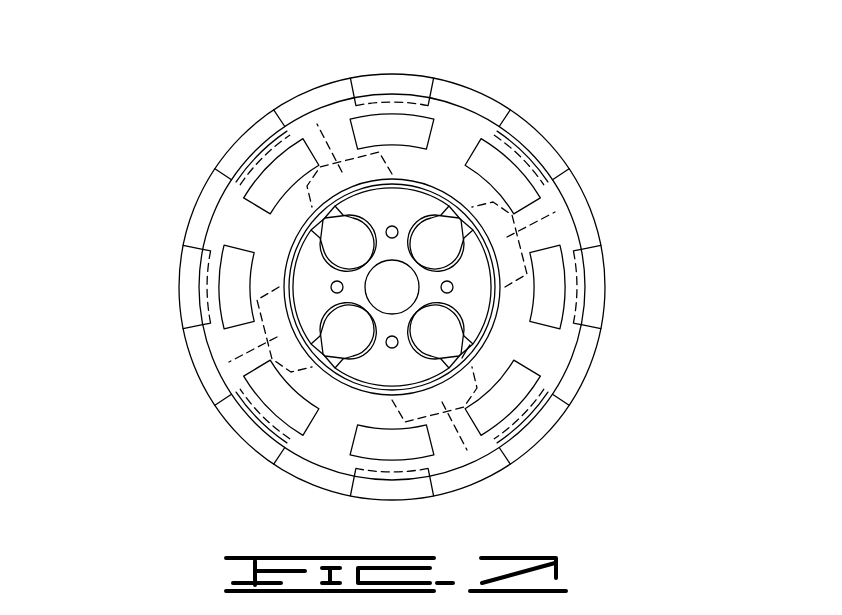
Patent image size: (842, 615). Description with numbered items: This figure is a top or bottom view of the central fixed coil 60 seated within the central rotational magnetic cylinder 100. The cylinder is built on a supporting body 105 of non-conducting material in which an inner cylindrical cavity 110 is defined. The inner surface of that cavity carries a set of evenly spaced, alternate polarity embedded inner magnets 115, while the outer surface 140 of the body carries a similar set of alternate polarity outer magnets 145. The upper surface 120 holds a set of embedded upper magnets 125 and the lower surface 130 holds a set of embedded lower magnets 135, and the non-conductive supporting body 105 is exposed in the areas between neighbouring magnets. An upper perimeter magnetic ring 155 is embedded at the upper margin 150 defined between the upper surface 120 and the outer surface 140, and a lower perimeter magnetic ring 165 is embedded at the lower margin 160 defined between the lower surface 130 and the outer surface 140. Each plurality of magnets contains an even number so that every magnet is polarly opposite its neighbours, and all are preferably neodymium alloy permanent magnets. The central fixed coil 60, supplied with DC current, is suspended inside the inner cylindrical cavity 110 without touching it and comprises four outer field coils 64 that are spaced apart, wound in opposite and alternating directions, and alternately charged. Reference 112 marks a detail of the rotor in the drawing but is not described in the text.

The central rotational magnetic cylinder 100 is at (664, 72).
The outer surface 140 is at (470, 90).
The supporting body 105 is at (467, 138).
The outer magnets 145 is at (602, 268).
The inner magnets 115 is at (480, 478).
The upper margin 150 is at (223, 245).
The lower margin 160 is at (261, 287).
The upper perimeter magnetic ring 155 is at (621, 287).
The lower perimeter magnetic ring 165 is at (522, 287).
The upper magnets 125 is at (202, 161).
The lower magnets 135 is at (285, 163).
The upper surface 120 is at (144, 257).
The lower surface 130 is at (232, 230).
The inner cylindrical cavity 110 is at (411, 341).
The rotor bridge 112 is at (462, 358).
The outer field coils 64 is at (305, 305).
The central fixed coil 60 is at (390, 305).